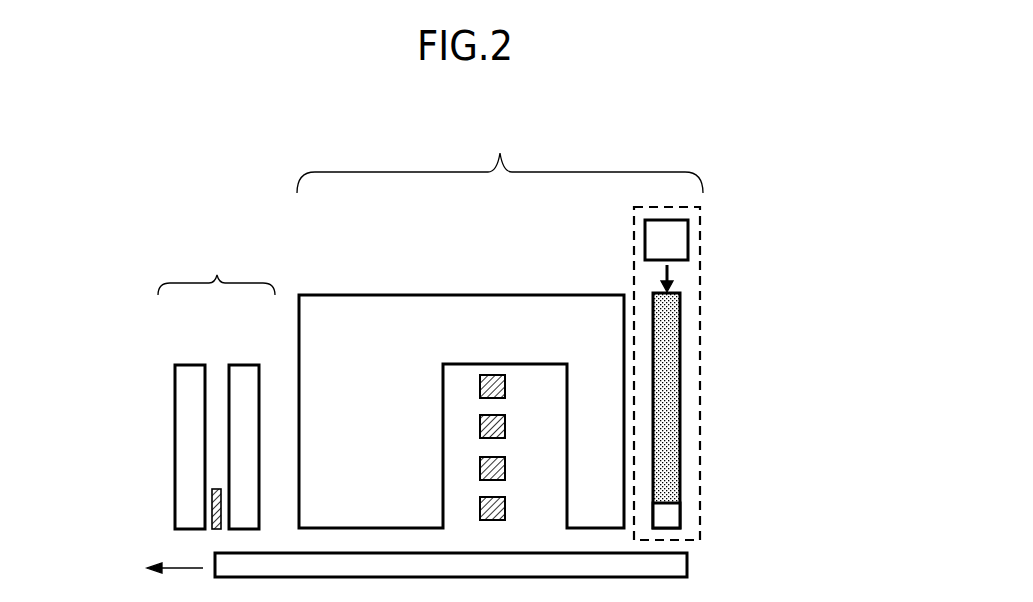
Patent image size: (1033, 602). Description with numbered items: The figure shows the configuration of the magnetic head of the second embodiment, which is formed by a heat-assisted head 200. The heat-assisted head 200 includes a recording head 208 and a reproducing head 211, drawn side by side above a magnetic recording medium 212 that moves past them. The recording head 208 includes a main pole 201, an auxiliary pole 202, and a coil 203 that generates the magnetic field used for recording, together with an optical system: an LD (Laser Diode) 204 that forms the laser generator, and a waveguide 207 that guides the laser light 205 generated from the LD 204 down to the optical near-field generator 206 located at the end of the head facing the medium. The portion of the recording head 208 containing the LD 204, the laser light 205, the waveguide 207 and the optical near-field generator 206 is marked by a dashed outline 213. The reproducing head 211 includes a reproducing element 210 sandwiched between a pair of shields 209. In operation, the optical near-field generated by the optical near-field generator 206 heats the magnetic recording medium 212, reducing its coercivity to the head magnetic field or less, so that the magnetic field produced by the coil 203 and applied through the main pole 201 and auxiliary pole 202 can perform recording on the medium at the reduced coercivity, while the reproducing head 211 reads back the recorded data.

The heat-assisted head 200 is at (209, 148).
The main pole 201 is at (593, 478).
The auxiliary pole 202 is at (407, 454).
The coil 203 is at (505, 383).
The LD (Laser Diode) 204 is at (678, 235).
The laser light 205 is at (672, 272).
The optical near-field generator 206 is at (673, 516).
The waveguide 207 is at (665, 323).
The recording head 208 is at (500, 159).
The shields 209 is at (242, 368).
The reproducing element 210 is at (212, 510).
The reproducing head 211 is at (216, 270).
The magnetic recording medium 212 is at (678, 567).
The supply section (dashed region) 213 is at (633, 235).